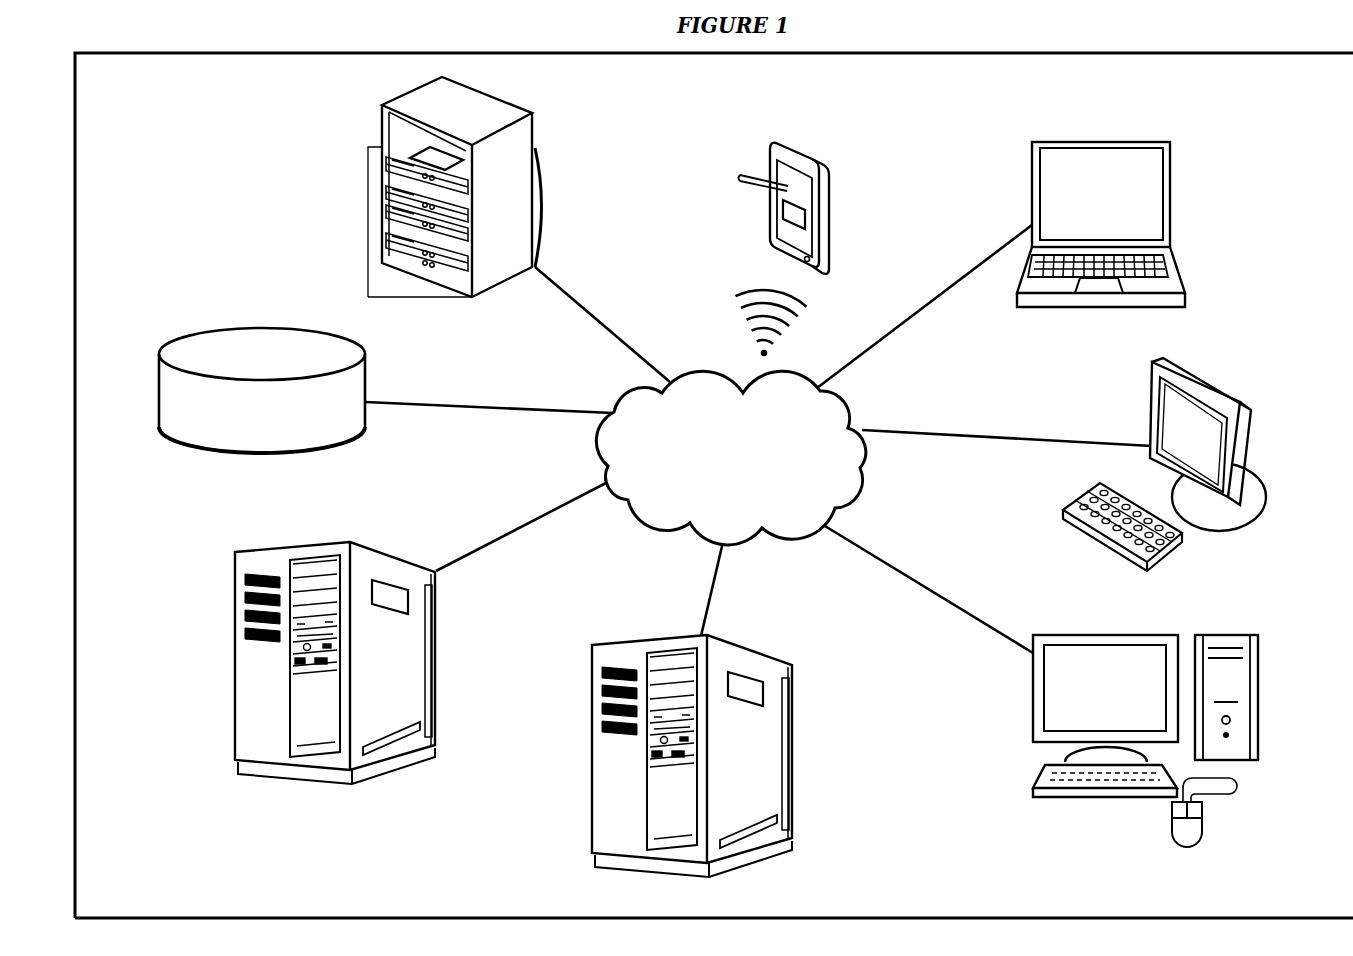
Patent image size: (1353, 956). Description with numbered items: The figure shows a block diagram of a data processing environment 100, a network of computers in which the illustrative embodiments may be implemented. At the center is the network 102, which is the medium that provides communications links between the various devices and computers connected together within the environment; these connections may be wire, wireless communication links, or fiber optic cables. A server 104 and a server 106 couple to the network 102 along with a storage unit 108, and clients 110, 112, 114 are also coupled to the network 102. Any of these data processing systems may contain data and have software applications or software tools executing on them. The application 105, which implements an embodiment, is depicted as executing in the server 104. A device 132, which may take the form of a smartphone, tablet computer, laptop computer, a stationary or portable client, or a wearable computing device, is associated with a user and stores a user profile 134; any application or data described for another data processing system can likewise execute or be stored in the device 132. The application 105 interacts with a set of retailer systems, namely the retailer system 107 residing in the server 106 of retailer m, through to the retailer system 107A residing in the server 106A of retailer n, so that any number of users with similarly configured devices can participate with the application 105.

The data processing environment 100 is at (124, 92).
The network 102 is at (746, 478).
The server 104 is at (477, 320).
The application 105 is at (450, 166).
The server 106 is at (375, 808).
The server 106A is at (736, 900).
The retailer system 107 is at (518, 590).
The retailer system 107A is at (781, 707).
The storage unit 108 is at (275, 434).
The client 110 is at (1288, 556).
The client 112 is at (1150, 696).
The client 114 is at (1145, 204).
The device 132 is at (845, 138).
The user profile 134 is at (793, 213).